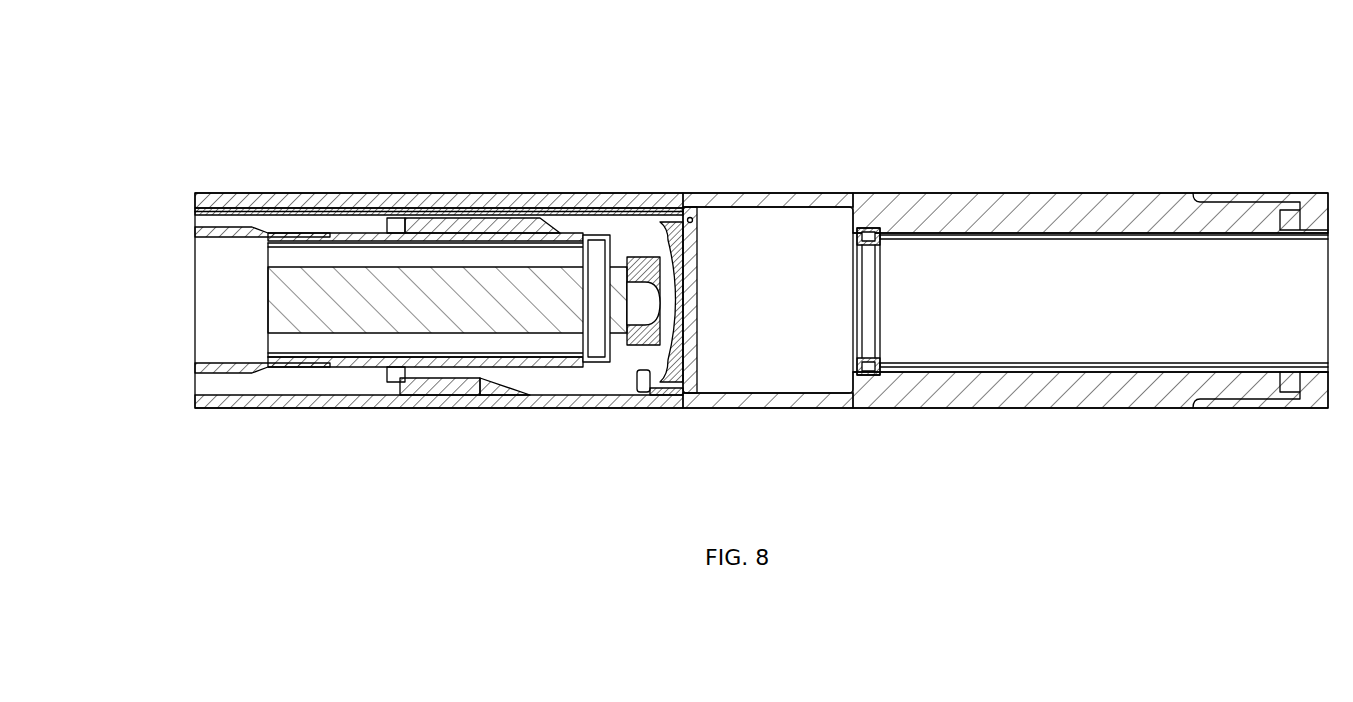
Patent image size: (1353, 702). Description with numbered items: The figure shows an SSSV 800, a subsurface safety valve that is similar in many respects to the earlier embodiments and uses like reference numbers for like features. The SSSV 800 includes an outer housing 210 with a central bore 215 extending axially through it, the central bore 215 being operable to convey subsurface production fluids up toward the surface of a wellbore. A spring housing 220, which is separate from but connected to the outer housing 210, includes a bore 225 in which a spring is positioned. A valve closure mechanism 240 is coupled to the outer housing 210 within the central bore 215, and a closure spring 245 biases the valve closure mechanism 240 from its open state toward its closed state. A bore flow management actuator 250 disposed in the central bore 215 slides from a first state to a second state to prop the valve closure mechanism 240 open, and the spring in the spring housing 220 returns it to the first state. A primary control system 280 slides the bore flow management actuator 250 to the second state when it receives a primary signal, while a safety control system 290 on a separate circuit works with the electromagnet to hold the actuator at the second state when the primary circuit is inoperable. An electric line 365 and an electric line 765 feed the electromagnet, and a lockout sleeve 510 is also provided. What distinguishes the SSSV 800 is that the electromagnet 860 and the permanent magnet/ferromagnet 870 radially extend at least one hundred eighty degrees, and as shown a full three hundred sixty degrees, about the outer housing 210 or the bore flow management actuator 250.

The SSSV 800 is at (175, 82).
The outer housing 210 is at (1125, 193).
The central bore 215 is at (1128, 311).
The spring housing 220 is at (272, 190).
The bore 225 is at (282, 387).
The valve closure mechanism 240 is at (690, 385).
The closure spring 245 is at (692, 207).
The bore flow management actuator 250 is at (432, 208).
The primary control system 280 is at (183, 387).
The safety control system 290 is at (183, 209).
The electric line 365 is at (803, 207).
The lockout sleeve 510 is at (983, 372).
The electric line 765 is at (518, 215).
The electromagnet 860 is at (577, 240).
The permanent magnet/ferromagnet 870 is at (883, 298).